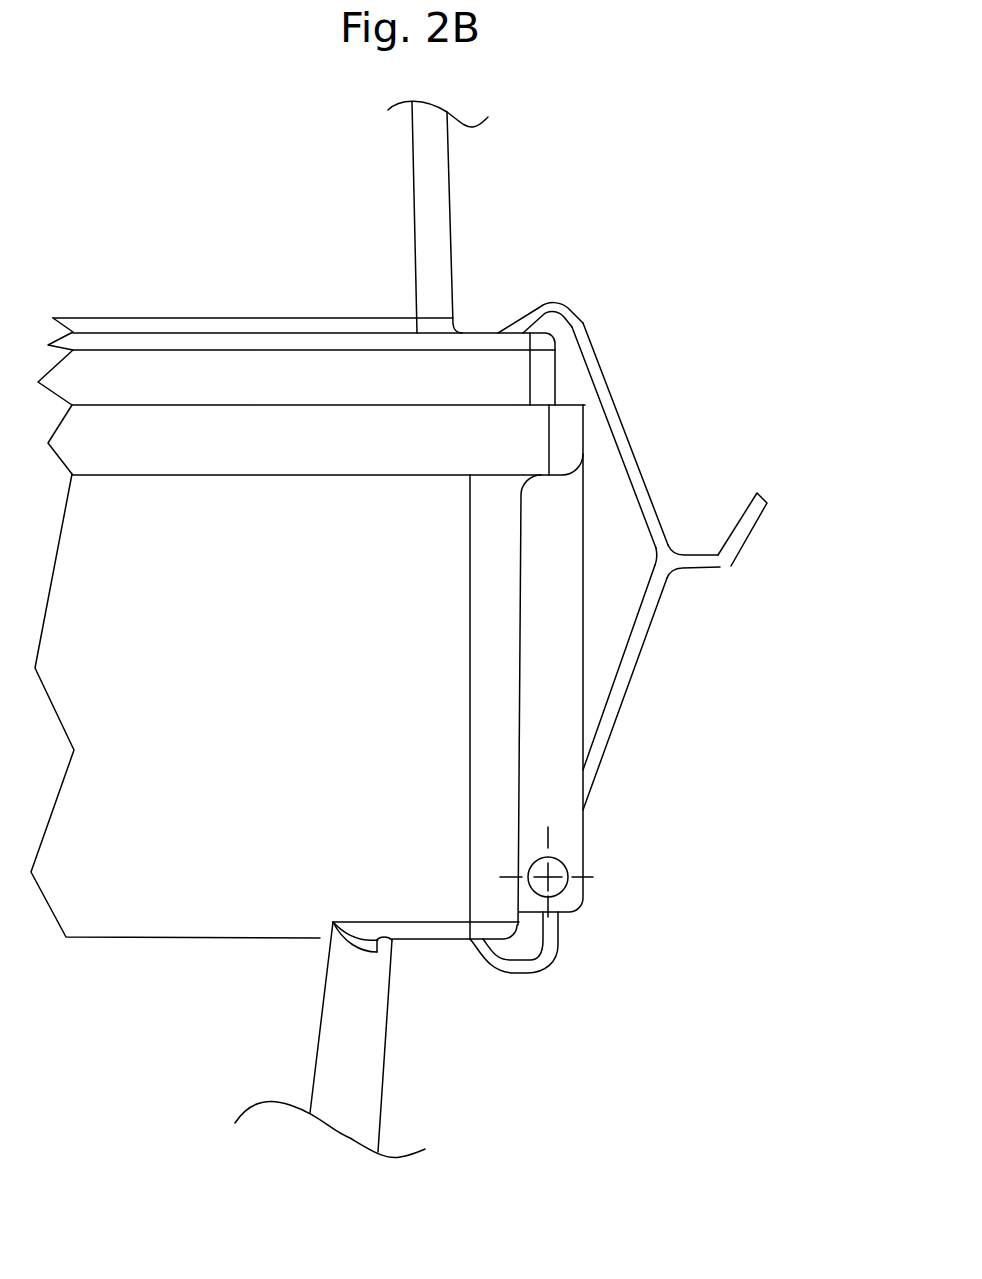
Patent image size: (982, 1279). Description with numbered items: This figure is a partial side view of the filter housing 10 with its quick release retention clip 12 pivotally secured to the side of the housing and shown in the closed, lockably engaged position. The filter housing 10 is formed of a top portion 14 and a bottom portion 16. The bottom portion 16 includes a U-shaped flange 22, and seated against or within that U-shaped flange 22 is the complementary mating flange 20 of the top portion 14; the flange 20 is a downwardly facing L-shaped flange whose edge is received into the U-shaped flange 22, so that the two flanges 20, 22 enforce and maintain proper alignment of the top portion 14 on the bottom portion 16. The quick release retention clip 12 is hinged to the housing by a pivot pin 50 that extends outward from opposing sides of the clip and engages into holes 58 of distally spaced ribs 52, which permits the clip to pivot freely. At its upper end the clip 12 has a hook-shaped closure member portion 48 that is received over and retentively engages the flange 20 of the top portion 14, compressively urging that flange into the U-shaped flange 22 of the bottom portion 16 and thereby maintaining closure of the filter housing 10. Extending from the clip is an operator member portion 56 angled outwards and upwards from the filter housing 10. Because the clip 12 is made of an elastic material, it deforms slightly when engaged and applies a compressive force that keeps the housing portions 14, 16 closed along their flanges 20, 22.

The filter housing 10 is at (653, 193).
The quick release retention clip 12 is at (668, 405).
The top portion 14 is at (272, 201).
The bottom portion 16 is at (289, 708).
The flange 20 is at (457, 391).
The U-shaped flange 22 is at (370, 450).
The hook-shaped closure member portion 48 is at (547, 306).
The pivot pin 50 is at (567, 866).
The ribs 52 is at (565, 838).
The operator member portion 56 is at (740, 535).
The holes 58 is at (556, 892).